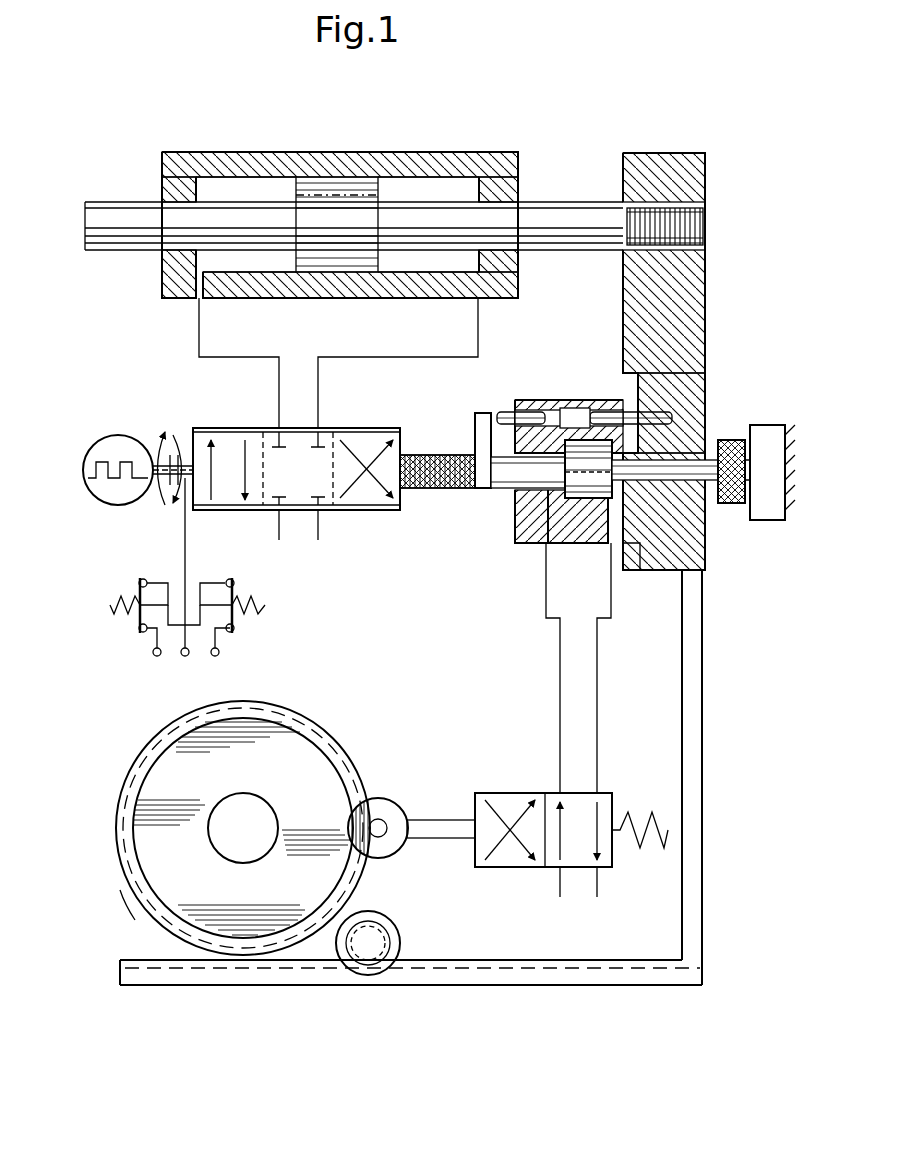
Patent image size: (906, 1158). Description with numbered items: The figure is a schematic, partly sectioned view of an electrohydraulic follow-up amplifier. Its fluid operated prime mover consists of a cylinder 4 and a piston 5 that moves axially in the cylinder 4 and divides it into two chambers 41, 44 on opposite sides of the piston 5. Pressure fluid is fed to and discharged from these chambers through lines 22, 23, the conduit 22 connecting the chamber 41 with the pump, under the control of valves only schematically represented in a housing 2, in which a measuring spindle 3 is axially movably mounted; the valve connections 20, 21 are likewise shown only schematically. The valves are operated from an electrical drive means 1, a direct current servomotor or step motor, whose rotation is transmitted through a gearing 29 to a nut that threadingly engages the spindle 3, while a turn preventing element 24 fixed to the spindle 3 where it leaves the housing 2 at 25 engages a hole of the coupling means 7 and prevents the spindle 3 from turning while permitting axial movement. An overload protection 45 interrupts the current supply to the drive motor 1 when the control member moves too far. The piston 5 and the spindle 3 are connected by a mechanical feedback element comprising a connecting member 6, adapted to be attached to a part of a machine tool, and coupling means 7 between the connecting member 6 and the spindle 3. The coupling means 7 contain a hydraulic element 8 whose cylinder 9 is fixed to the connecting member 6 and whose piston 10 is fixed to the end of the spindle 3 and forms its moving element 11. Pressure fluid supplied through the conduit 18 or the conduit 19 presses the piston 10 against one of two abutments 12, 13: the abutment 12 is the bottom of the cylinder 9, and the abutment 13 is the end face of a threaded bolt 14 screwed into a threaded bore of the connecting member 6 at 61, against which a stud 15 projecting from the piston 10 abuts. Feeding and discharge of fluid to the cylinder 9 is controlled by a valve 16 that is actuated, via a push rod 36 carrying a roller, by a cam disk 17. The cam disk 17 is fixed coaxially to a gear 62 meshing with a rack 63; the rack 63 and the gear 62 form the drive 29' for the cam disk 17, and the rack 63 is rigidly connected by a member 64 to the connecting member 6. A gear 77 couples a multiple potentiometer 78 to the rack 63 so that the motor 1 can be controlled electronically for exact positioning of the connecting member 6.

The electrical drive means 1 is at (120, 445).
The housing 2 is at (370, 427).
The measuring spindle 3 is at (440, 492).
The cylinder 4 is at (401, 152).
The piston 5 is at (330, 195).
The connecting member 6 is at (623, 178).
The coupling means 7 is at (598, 396).
The hydraulic element 8 is at (530, 548).
The cylinder 9 is at (566, 372).
The piston 10 is at (648, 565).
The moving element 11 is at (585, 500).
The abutment 12 is at (525, 490).
The abutment 13 is at (660, 485).
The threaded bolt 14 is at (725, 505).
The stud 15 is at (640, 432).
The valve 16 is at (605, 800).
The cam disk 17 is at (300, 762).
The conduit 18 is at (560, 737).
The conduit 19 is at (597, 737).
The valve port 20 is at (279, 535).
The cam face 21 is at (318, 535).
The conduit 22 is at (199, 330).
The pressure line 23 is at (478, 325).
The turn preventing element 24 is at (483, 490).
The spring support 25 is at (440, 453).
The gearing 29 is at (137, 493).
The drive 29' is at (105, 911).
The push rod 36 is at (430, 838).
The chamber 41 is at (440, 190).
The chamber 44 is at (245, 187).
The overload protection 45 is at (160, 662).
The stop block 61 is at (768, 440).
The gear 62 is at (128, 862).
The rack 63 is at (190, 975).
The member 64 is at (695, 765).
The gear 77 is at (352, 955).
The multiple potentiometer 78 is at (395, 948).